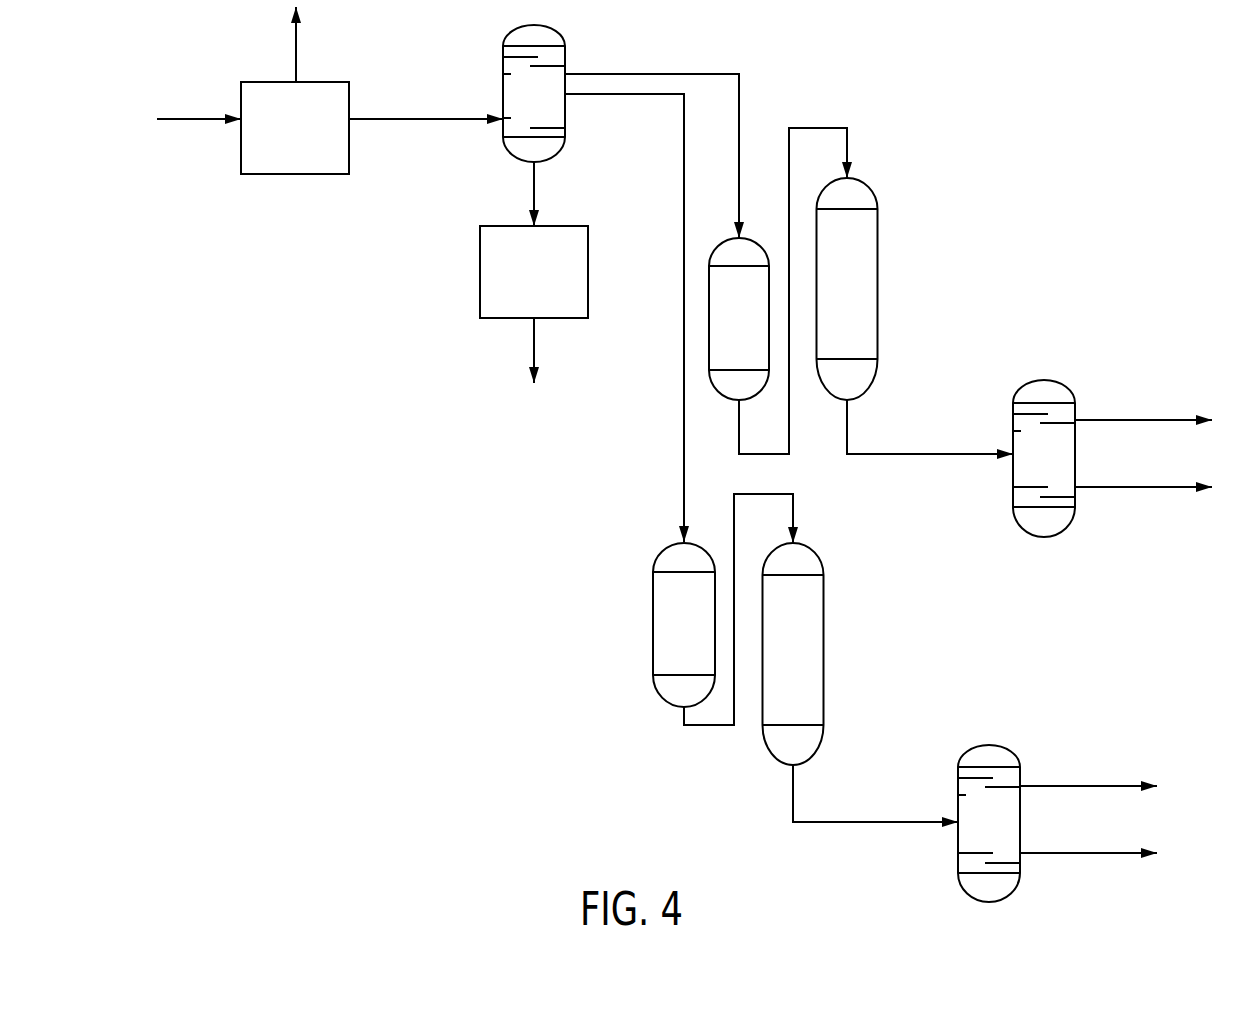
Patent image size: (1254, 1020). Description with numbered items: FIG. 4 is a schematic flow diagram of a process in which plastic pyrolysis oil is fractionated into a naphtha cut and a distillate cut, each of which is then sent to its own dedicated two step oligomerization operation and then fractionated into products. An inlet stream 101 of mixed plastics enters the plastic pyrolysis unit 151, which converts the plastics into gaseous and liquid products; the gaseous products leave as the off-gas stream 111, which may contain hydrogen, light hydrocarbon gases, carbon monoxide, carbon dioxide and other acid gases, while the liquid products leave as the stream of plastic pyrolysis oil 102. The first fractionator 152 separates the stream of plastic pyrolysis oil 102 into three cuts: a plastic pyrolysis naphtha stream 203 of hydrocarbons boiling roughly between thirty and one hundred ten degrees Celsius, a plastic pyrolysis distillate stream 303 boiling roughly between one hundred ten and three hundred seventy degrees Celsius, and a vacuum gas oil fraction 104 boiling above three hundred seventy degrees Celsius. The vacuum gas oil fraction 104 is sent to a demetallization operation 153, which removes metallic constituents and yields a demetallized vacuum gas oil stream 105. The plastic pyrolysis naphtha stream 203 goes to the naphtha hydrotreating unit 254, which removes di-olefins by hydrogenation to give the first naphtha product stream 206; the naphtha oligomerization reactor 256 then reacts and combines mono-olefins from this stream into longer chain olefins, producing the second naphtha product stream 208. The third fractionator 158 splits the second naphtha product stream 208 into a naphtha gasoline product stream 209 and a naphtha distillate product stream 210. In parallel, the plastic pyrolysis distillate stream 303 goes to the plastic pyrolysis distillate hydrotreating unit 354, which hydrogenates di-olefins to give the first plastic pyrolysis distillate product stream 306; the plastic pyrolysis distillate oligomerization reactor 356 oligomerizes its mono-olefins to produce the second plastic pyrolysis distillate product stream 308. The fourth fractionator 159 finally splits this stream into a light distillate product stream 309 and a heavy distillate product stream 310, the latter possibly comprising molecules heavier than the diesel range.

The inlet stream 101 is at (195, 118).
The off-gas stream 111 is at (295, 57).
The plastic pyrolysis unit 151 is at (309, 144).
The stream of plastic pyrolysis oil 102 is at (417, 118).
The first fractionator 152 is at (548, 104).
The vacuum gas oil fraction 104 is at (533, 183).
The demetallization operation 153 is at (548, 288).
The demetallized vacuum gas oil stream 105 is at (533, 342).
The plastic pyrolysis naphtha stream 203 is at (647, 72).
The plastic pyrolysis distillate stream 303 is at (615, 97).
The naphtha hydrotreating unit 254 is at (753, 336).
The naphtha oligomerization reactor 256 is at (861, 304).
The first naphtha product stream 206 is at (820, 127).
The second naphtha product stream 208 is at (930, 458).
The third fractionator 158 is at (1058, 473).
The naphtha gasoline product stream 209 is at (1137, 418).
The naphtha distillate product stream 210 is at (1135, 490).
The plastic pyrolysis distillate hydrotreating unit 354 is at (698, 641).
The first plastic pyrolysis distillate product stream 306 is at (708, 728).
The plastic pyrolysis distillate oligomerization reactor 356 is at (807, 671).
The second plastic pyrolysis distillate product stream 308 is at (865, 826).
The fourth fractionator 159 is at (1003, 838).
The light distillate product stream 309 is at (1082, 782).
The heavy distillate product stream 310 is at (1082, 856).